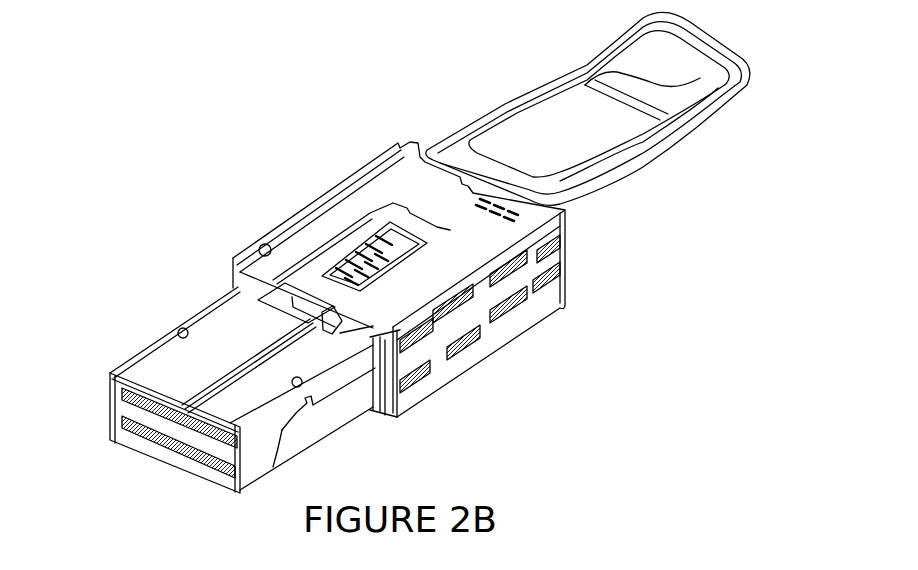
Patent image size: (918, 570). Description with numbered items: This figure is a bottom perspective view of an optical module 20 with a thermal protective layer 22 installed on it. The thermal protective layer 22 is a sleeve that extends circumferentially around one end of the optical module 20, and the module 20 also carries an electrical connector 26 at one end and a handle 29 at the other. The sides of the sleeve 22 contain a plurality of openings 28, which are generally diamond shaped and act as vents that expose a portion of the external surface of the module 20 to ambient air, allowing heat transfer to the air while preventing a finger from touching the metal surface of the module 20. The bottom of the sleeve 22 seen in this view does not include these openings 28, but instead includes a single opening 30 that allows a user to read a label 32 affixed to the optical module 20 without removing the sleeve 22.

The optical module 20 is at (203, 322).
The thermal protective layer 22 is at (397, 153).
The electrical connector 26 is at (148, 438).
The openings 28 is at (497, 312).
The handle 29 is at (577, 73).
The opening 30 is at (327, 252).
The label 32 is at (367, 242).